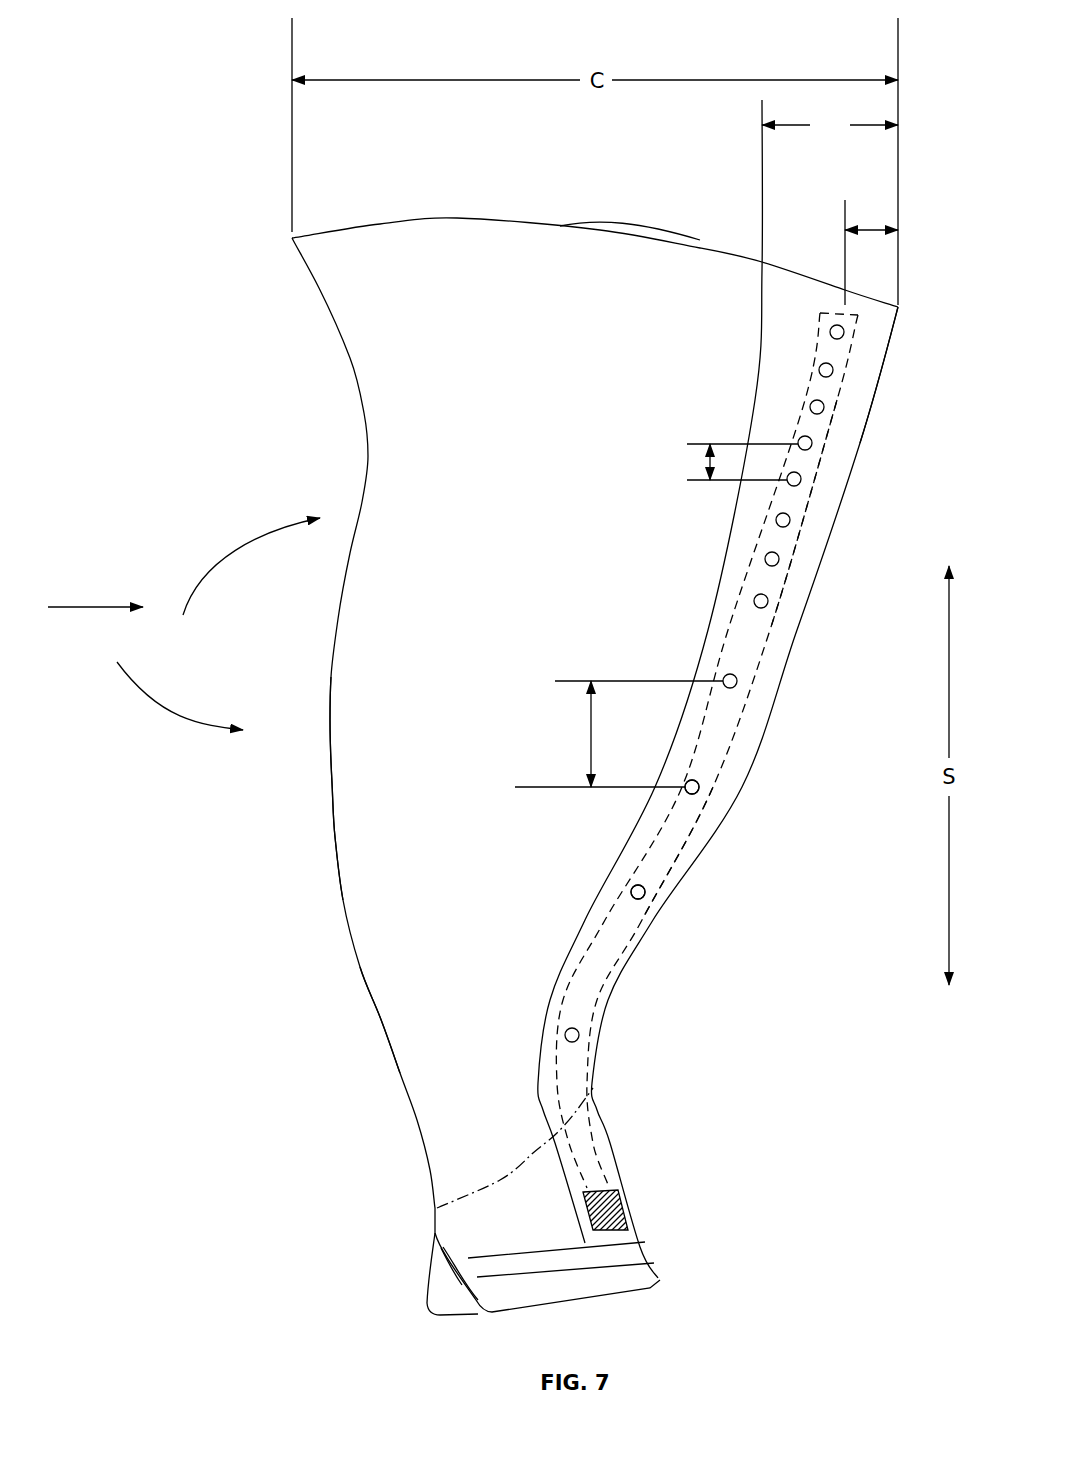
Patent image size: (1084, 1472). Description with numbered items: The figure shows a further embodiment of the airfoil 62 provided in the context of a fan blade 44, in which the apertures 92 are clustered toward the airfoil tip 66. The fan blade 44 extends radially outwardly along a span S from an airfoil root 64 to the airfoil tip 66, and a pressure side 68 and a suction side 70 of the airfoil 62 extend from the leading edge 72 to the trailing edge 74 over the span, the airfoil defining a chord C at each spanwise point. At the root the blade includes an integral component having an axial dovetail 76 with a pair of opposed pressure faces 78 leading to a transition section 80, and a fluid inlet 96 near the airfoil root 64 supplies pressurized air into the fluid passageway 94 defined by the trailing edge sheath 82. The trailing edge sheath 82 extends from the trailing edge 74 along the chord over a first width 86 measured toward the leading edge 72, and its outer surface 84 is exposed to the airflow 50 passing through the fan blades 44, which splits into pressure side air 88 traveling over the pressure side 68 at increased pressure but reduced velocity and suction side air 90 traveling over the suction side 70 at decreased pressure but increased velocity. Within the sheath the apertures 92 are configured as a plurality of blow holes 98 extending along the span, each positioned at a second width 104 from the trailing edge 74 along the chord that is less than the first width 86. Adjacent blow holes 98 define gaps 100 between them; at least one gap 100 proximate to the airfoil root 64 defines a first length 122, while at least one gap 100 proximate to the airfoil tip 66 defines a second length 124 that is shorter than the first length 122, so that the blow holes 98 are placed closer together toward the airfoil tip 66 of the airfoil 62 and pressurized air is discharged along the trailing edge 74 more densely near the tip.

The fan blade 44 is at (698, 228).
The airflow 50 is at (95, 607).
The airfoil 62 is at (403, 943).
The airfoil root 64 is at (535, 1143).
The airfoil tip 66 is at (605, 232).
The pressure side 68 is at (544, 613).
The suction side 70 is at (448, 680).
The leading edge 72 is at (334, 835).
The trailing edge 74 is at (786, 683).
The axial dovetail 76 is at (458, 1298).
The pressure faces 78 is at (437, 1270).
The transition section 80 is at (552, 1193).
The trailing edge sheath 82 is at (858, 442).
The outer surface 84 is at (792, 603).
The first width 86 is at (718, 671).
The pressure side air 88 is at (182, 716).
The suction side air 90 is at (215, 570).
The apertures 92 is at (700, 790).
The fluid passageway 94 is at (673, 864).
The fluid inlet 96 is at (638, 1201).
The blow holes 98 is at (632, 890).
The gaps 100 is at (704, 683).
The second width 104 is at (871, 252).
The first length 122 is at (619, 734).
The second length 124 is at (705, 462).